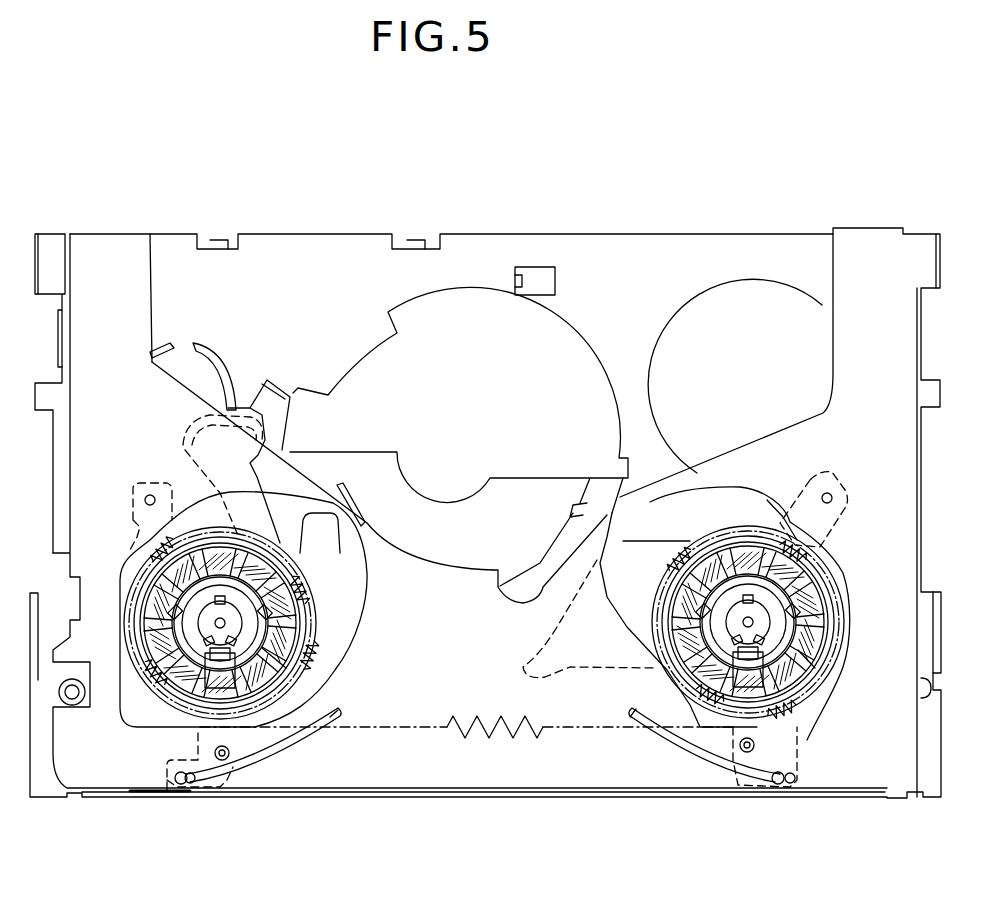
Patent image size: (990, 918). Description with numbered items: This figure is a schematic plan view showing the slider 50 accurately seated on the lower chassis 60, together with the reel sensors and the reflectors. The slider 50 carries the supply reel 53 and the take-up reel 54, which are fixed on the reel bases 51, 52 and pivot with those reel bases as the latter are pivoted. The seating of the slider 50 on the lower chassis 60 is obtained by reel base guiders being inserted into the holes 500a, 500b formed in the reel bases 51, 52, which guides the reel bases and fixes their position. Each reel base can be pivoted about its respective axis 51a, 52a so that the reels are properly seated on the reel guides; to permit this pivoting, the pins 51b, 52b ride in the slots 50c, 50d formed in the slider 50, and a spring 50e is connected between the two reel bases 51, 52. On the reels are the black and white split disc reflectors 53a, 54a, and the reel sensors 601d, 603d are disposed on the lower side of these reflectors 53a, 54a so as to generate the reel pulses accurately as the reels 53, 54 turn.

The lower chassis 60 is at (727, 252).
The slider 50 is at (576, 793).
The slot 50c is at (333, 720).
The slot 50d is at (633, 718).
The spring 50e is at (452, 733).
The reel base 51 is at (247, 513).
The axis 51a is at (137, 482).
The pin 51b is at (182, 786).
The reel base 52 is at (837, 505).
The axis 52a is at (835, 495).
The pin 52b is at (785, 784).
The supply reel 53 is at (213, 636).
The reflector 53a is at (275, 662).
The take-up reel 54 is at (843, 690).
The reflector 54a is at (817, 670).
The hole 500a is at (222, 762).
The hole 500b is at (745, 752).
The reel sensor 601d is at (232, 655).
The reel sensor 603d is at (745, 660).